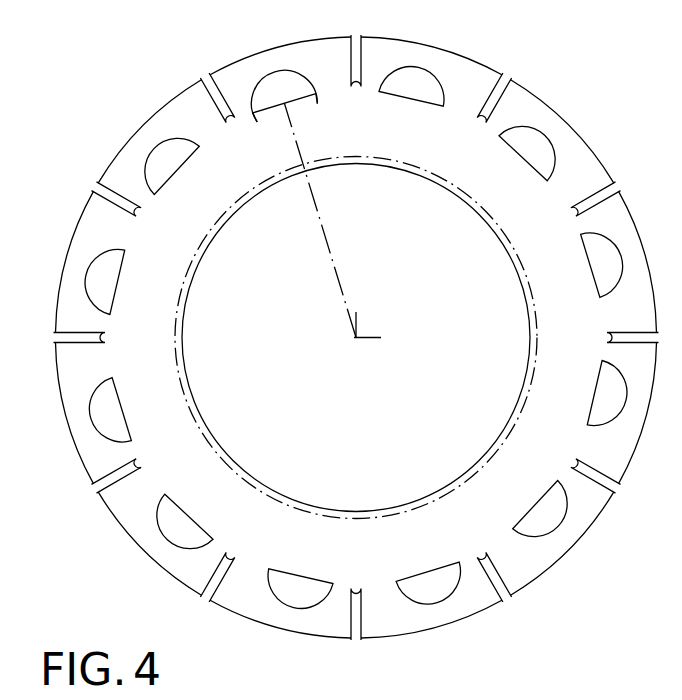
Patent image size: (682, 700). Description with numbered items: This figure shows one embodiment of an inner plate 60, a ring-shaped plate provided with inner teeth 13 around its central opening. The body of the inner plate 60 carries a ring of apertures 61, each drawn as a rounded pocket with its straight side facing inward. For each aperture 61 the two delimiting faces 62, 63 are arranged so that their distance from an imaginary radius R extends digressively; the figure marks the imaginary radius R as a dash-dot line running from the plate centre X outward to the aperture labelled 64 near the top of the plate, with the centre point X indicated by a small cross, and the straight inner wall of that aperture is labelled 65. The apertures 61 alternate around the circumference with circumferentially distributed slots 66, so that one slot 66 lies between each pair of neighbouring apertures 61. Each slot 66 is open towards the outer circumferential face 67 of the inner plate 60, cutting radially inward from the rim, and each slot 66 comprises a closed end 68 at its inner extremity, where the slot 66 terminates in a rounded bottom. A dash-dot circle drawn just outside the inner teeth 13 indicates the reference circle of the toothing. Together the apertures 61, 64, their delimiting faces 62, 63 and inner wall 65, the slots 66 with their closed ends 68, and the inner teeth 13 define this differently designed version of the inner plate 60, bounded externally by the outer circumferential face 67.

The inner plate 60 is at (334, 324).
The apertures 61 is at (597, 262).
The delimiting face 62 is at (310, 100).
The delimiting face 63 is at (254, 112).
The pocket 64 is at (282, 93).
The pocket flat wall 65 is at (270, 108).
The slots 66 is at (113, 476).
The outer circumferential face 67 is at (138, 550).
The closed end 68 is at (143, 462).
The inner teeth 13 is at (401, 157).
The imaginary radius R is at (326, 262).
The center axis X is at (353, 340).